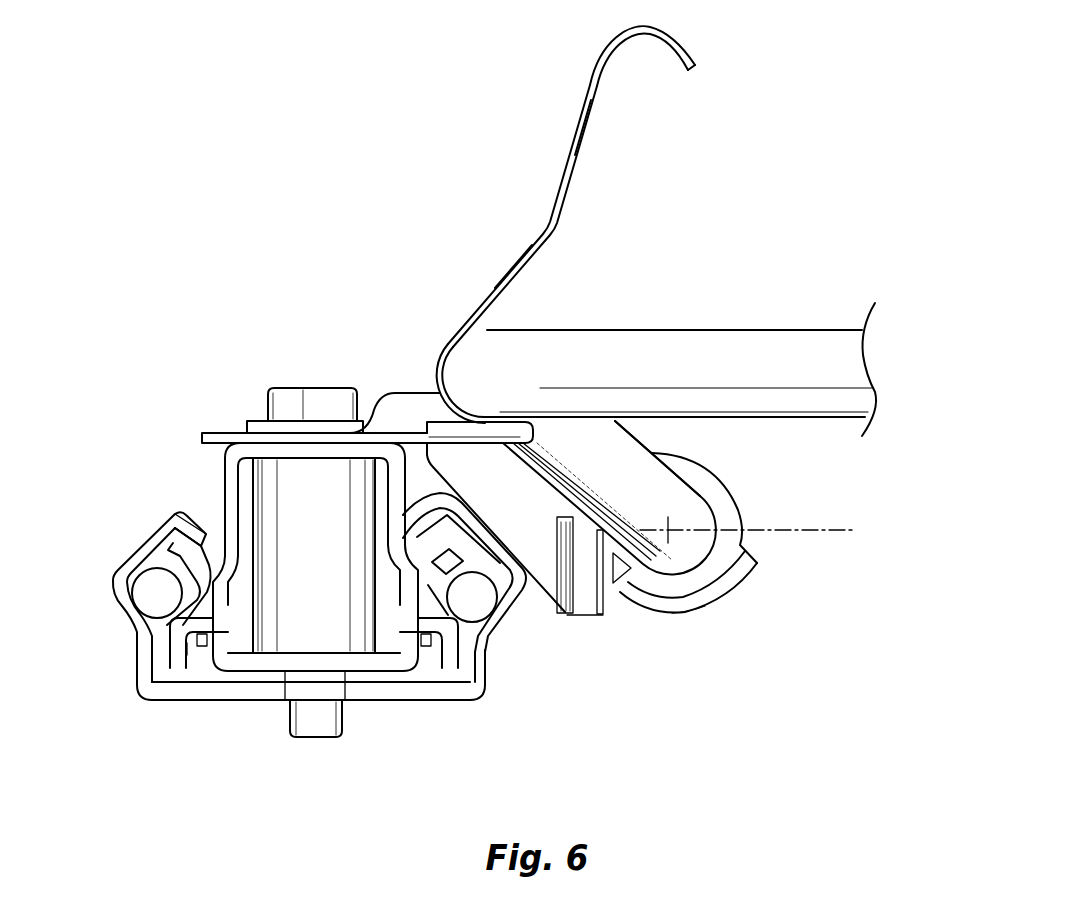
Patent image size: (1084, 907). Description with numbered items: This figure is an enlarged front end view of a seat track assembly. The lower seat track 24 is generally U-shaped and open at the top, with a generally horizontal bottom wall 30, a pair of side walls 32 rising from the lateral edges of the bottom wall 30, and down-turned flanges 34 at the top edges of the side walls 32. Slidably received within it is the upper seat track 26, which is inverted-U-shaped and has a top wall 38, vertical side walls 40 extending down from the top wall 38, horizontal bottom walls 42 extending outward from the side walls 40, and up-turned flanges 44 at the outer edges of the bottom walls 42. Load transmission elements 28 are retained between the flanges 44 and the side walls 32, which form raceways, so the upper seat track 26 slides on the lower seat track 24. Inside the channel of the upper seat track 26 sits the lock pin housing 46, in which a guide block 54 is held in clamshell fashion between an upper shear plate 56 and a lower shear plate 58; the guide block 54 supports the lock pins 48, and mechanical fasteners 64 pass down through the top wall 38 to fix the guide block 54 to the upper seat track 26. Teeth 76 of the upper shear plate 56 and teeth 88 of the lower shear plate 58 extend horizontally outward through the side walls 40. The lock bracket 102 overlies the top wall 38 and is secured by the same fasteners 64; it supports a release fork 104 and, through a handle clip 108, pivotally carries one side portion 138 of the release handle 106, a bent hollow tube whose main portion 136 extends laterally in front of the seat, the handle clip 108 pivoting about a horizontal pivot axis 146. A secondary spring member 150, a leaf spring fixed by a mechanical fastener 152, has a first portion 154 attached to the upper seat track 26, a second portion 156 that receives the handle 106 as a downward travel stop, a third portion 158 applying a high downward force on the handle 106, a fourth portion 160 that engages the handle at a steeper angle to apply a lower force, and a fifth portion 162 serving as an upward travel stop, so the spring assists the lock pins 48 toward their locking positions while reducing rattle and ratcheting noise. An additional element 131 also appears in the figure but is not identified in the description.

The lower seat track 24 is at (148, 695).
The upper seat track 26 is at (223, 472).
The load transmission elements 28 is at (187, 580).
The bottom wall 30 is at (208, 700).
The side walls 32 is at (140, 657).
The down-turned flanges 34 is at (182, 517).
The top wall 38 is at (270, 455).
The side walls 40 is at (197, 512).
The bottom walls 42 is at (187, 643).
The up-turned flanges 44 is at (200, 610).
The lock pin housing 46 is at (380, 663).
The lock pins 48 is at (312, 738).
The guide block 54 is at (386, 475).
The upper shear plate 56 is at (200, 555).
The lower shear plate 58 is at (267, 673).
The mechanical fasteners 64 is at (332, 388).
The teeth 76 is at (203, 633).
The teeth 88 is at (183, 617).
The lock bracket 102 is at (427, 423).
The release fork 104 is at (742, 583).
The handle 106 is at (647, 449).
The handle clip 108 is at (735, 497).
The end 131 is at (690, 612).
The main portion 136 is at (640, 330).
The side portions 138 is at (650, 447).
The pivot axis 146 is at (800, 530).
The secondary spring member 150 is at (585, 102).
The mechanical fastener 152 is at (300, 437).
The first portion 154 is at (222, 434).
The second portion 156 is at (488, 409).
The third portion 158 is at (533, 241).
The fourth portion 160 is at (586, 137).
The fifth portion 162 is at (672, 45).